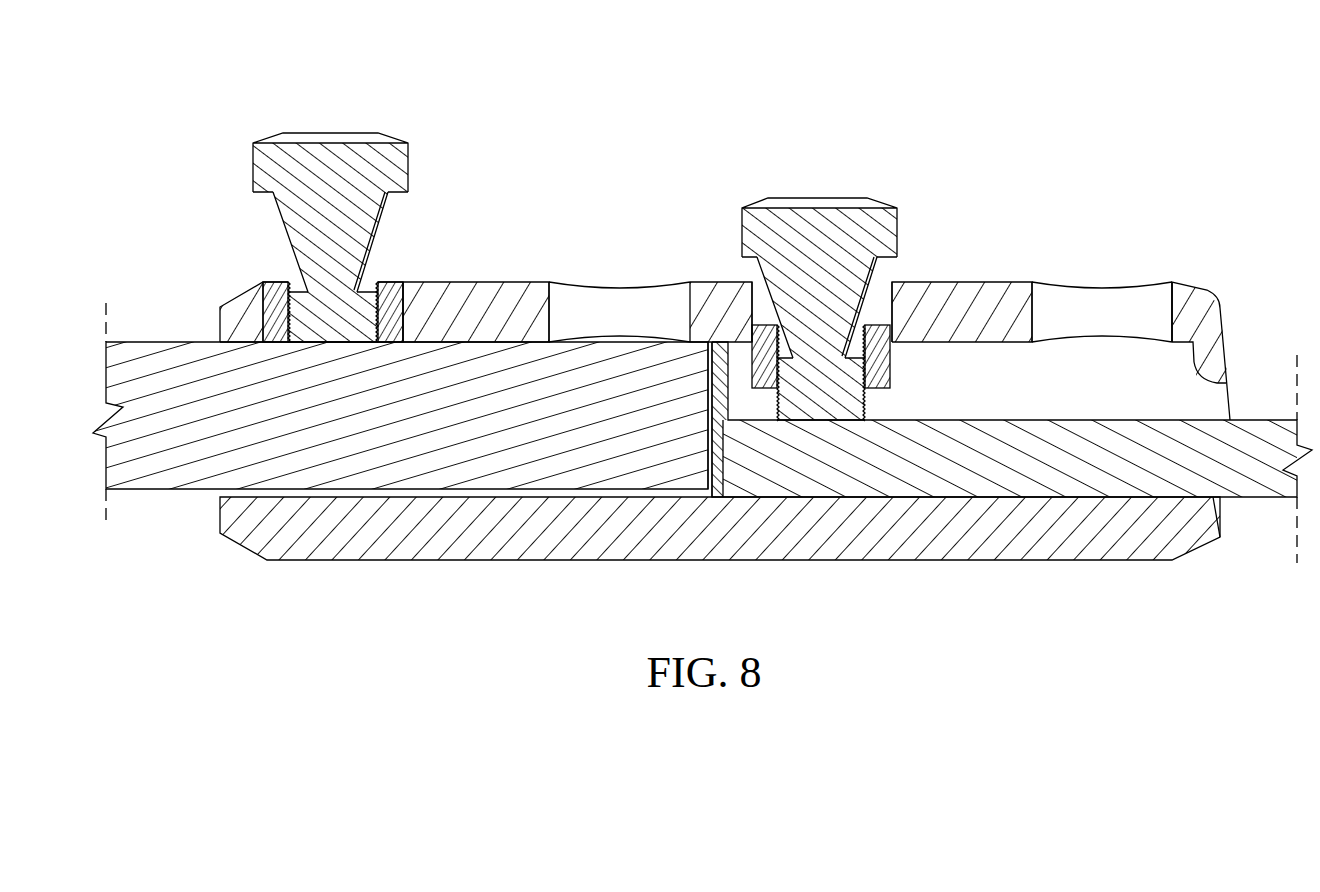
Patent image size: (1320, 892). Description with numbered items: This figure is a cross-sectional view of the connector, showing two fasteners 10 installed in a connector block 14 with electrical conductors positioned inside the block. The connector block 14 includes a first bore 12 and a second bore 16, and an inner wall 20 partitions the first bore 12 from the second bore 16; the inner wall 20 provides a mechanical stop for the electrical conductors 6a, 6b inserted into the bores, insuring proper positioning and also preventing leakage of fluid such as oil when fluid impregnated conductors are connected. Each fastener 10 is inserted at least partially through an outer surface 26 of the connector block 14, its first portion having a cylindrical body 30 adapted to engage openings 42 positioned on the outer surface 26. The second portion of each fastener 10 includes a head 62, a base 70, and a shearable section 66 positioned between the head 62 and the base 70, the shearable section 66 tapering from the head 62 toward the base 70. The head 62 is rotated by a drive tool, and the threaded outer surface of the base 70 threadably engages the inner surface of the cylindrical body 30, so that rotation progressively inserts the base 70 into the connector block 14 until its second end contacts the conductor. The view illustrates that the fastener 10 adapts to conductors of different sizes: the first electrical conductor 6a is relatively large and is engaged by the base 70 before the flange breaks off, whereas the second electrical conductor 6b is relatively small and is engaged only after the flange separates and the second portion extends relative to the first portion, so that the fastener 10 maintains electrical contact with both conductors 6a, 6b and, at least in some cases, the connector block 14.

The fastener 10 is at (570, 351).
The head 62 is at (340, 160).
The shearable section 66 is at (284, 266).
The base 70 is at (262, 286).
The cylindrical body 30 is at (292, 327).
The openings 42 is at (402, 284).
The connector block 14 is at (751, 314).
The second bore 16 is at (1226, 380).
The first bore 12 is at (702, 461).
The first electrical conductor 6a is at (348, 476).
The second electrical conductor 6b is at (802, 476).
The inner wall 20 is at (717, 445).
The outer surface 26 is at (1085, 560).